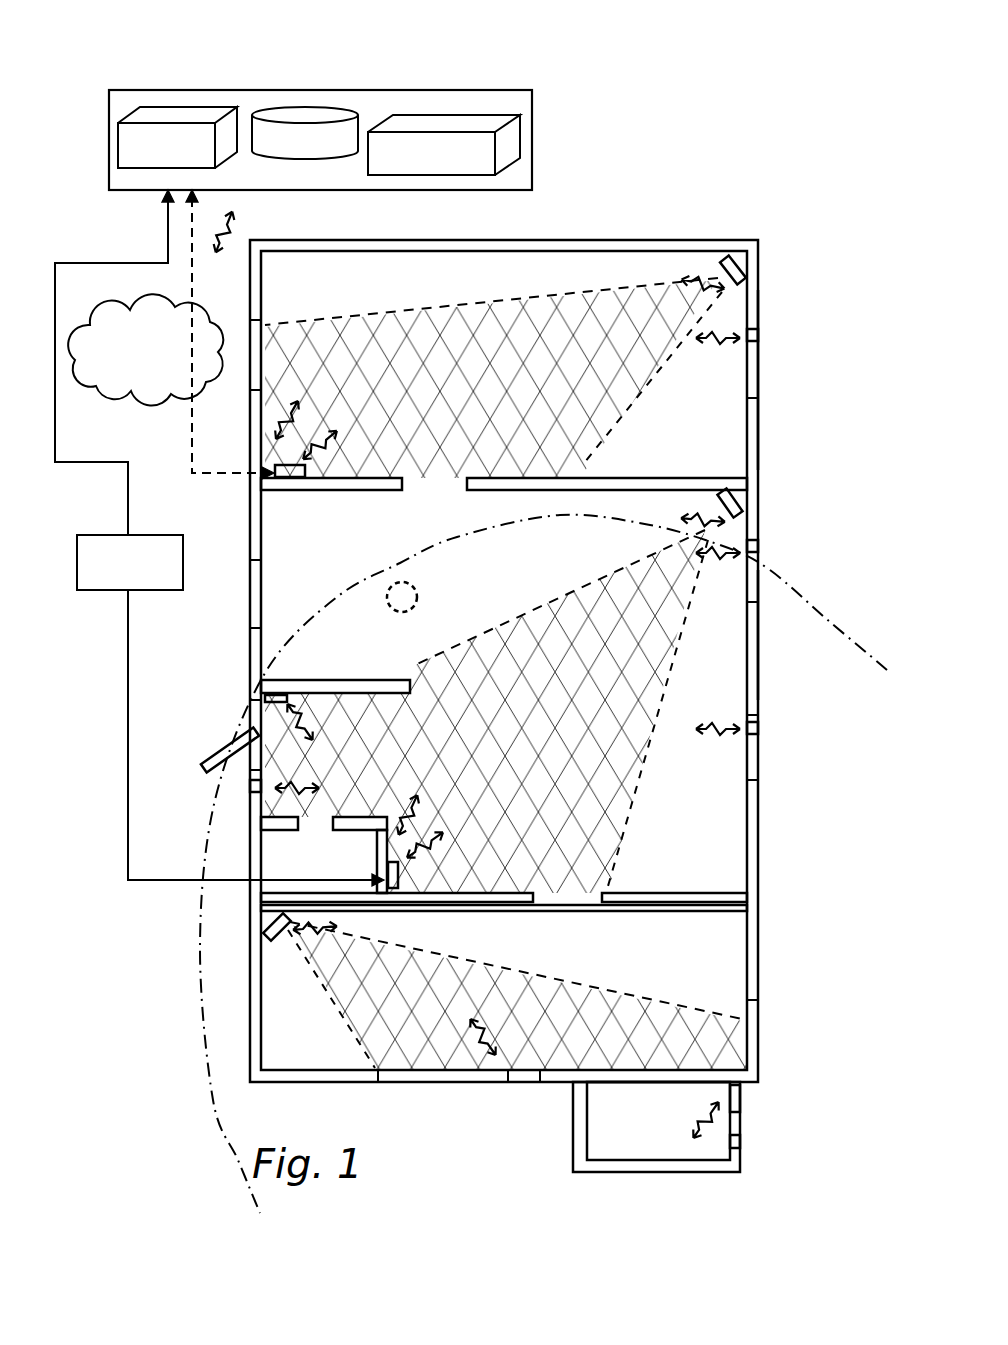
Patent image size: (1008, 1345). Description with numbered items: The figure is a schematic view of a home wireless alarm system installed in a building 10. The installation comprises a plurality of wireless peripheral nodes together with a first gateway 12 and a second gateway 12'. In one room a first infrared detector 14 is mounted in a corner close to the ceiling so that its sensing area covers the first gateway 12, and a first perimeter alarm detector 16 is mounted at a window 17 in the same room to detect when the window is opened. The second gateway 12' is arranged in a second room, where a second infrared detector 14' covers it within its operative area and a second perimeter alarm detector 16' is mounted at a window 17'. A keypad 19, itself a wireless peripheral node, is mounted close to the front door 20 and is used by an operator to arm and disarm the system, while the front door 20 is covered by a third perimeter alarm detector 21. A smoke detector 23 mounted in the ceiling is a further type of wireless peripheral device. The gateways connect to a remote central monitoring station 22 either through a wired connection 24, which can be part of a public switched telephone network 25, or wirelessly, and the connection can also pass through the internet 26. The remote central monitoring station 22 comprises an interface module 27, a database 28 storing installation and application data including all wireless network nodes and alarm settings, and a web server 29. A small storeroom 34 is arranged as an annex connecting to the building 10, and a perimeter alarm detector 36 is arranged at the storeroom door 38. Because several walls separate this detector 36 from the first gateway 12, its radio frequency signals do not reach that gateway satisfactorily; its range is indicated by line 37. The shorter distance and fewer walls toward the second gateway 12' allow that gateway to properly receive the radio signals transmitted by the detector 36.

The building 10 is at (545, 214).
The first gateway 12 is at (332, 439).
The second gateway 12' is at (451, 841).
The first infrared detector 14 is at (754, 252).
The second infrared detector 14' is at (760, 494).
The first perimeter alarm detector 16 is at (767, 318).
The second perimeter alarm detector 16' is at (771, 625).
The window 17 is at (800, 380).
The window 17' is at (806, 635).
The keypad 19 is at (290, 705).
The front door 20 is at (218, 760).
The third perimeter alarm detector 21 is at (253, 787).
The remote central monitoring station 22 is at (299, 70).
The smoke detector 23 is at (395, 588).
The wired connection 24 is at (126, 624).
The public switched telephone network 25 is at (170, 537).
The internet 26 is at (162, 404).
The interface module 27 is at (125, 133).
The database 28 is at (268, 122).
The web server 29 is at (514, 140).
The storeroom 34 is at (656, 1127).
The third perimeter alarm detector 36 is at (742, 1138).
The line 37 is at (862, 645).
The storeroom door 38 is at (742, 1110).